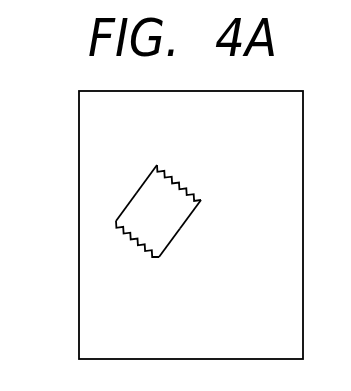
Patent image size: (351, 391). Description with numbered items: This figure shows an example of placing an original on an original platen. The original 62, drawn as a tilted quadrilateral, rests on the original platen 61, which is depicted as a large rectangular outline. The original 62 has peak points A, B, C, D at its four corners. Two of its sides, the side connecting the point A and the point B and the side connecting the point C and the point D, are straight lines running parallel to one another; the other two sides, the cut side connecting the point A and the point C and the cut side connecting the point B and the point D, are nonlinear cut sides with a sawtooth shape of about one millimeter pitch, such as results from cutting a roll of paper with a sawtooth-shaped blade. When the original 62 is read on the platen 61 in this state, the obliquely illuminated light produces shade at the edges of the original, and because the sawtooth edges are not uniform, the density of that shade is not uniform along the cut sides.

The original platen 61 is at (79, 265).
The original 62 is at (125, 205).
The point A is at (152, 165).
The point B is at (116, 217).
The point C is at (201, 206).
The point D is at (165, 259).